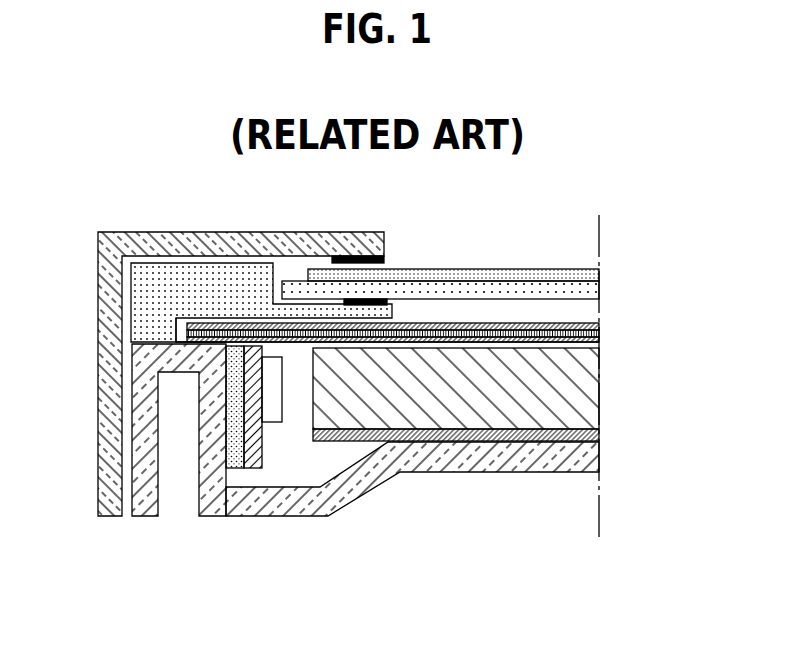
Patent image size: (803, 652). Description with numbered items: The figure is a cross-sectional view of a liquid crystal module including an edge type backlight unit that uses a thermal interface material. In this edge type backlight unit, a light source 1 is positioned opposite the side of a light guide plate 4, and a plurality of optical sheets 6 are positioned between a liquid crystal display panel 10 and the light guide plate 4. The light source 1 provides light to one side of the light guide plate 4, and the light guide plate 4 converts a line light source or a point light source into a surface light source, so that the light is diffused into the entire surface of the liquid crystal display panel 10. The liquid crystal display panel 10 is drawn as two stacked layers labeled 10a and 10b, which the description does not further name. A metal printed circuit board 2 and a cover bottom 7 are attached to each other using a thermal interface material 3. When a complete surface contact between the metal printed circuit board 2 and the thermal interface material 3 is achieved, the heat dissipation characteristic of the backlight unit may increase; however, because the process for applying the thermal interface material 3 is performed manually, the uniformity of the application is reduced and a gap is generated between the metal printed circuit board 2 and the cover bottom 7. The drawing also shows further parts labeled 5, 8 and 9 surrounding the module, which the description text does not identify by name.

The light source 1 is at (273, 408).
The metal printed circuit board 2 is at (255, 457).
The thermal interface material 3 is at (237, 457).
The light guide plate 4 is at (590, 383).
The bottom chassis 5 is at (590, 436).
The optical sheets 6 is at (610, 322).
The cover bottom 7 is at (210, 493).
The display panel support 8 is at (147, 312).
The top chassis 9 is at (115, 270).
The liquid crystal display panel 10 is at (508, 281).
The upper substrate 10a is at (590, 276).
The lower substrate 10b is at (590, 288).